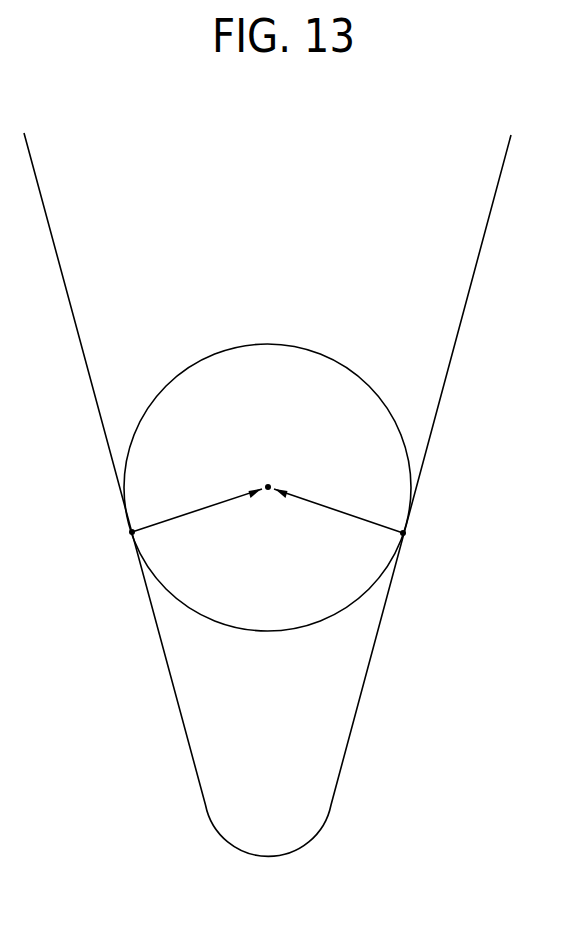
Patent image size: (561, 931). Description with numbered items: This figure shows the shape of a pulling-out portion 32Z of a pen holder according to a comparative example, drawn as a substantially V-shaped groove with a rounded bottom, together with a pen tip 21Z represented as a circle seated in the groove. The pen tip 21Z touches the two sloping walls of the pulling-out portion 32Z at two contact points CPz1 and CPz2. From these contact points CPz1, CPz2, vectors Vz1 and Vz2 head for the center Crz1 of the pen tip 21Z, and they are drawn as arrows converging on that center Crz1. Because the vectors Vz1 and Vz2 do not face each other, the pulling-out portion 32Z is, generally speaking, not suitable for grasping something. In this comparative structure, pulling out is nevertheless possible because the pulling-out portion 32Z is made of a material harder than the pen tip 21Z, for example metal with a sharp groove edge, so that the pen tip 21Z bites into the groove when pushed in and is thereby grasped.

The pulling-out portion 32Z is at (458, 313).
The pen tip 21Z is at (367, 380).
The center of pen tip Crz1 is at (268, 487).
The contact point CPz1 is at (403, 533).
The contact point CPz2 is at (132, 532).
The vector Vz1 is at (353, 518).
The vector Vz2 is at (183, 518).